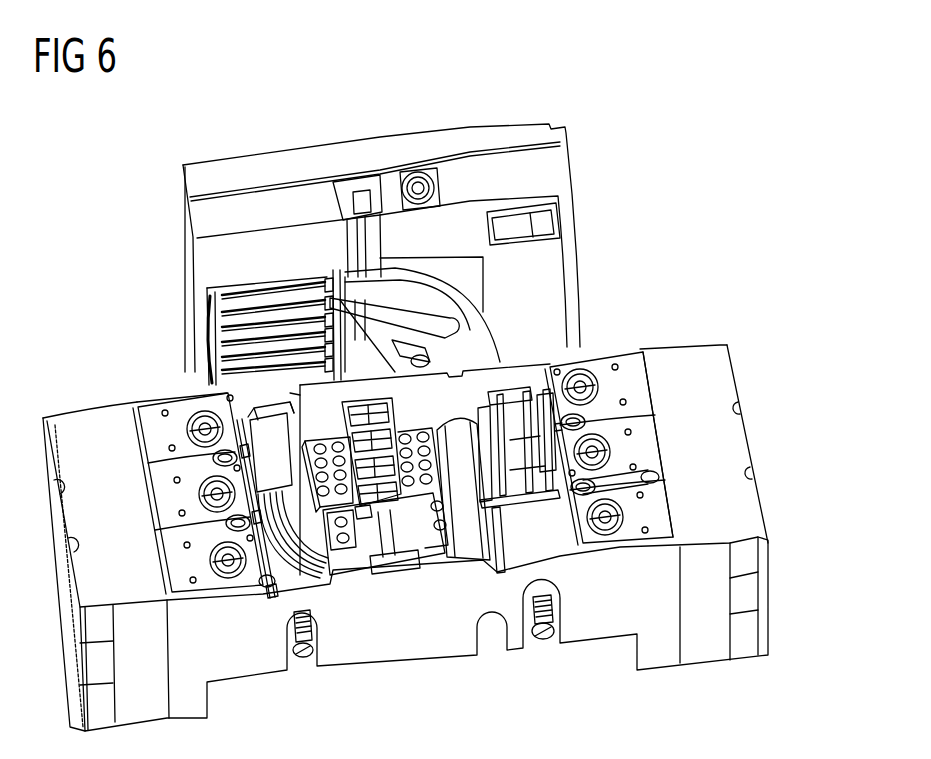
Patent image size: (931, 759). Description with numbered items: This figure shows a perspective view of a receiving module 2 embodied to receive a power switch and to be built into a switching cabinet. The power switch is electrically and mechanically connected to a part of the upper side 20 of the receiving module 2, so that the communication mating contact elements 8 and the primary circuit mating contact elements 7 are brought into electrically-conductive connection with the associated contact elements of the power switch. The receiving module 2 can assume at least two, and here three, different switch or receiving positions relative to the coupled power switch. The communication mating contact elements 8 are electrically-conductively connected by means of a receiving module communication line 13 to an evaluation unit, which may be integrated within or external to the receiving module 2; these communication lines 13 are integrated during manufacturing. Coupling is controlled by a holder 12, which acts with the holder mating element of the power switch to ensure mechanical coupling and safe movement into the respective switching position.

The receiving module 2 is at (682, 181).
The primary circuit mating contact elements 7 is at (202, 425).
The communication mating contact elements 8 is at (382, 411).
The holder 12 is at (440, 296).
The receiving module communication line 13 is at (207, 347).
The upper side 20 is at (86, 422).